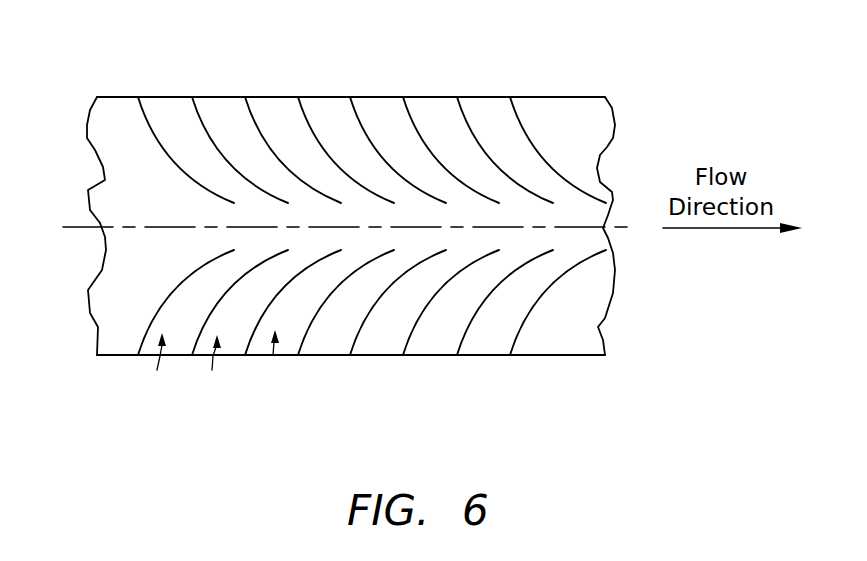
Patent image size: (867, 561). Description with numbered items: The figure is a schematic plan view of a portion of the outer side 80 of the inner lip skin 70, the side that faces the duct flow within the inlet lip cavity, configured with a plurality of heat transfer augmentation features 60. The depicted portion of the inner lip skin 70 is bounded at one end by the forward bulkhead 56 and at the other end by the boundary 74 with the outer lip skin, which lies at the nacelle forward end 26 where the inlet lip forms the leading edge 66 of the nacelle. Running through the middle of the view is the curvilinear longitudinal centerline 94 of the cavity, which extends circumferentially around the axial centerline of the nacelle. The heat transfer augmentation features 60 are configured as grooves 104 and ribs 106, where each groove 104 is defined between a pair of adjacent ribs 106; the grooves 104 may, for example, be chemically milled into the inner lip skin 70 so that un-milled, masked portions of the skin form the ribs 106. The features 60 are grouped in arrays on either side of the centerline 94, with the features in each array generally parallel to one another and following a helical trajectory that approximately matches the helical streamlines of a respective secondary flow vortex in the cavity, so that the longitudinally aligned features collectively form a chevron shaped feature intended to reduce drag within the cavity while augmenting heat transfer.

The nacelle forward end 26 is at (378, 395).
The forward bulkhead 56 is at (568, 97).
The heat transfer augmentation features 60 is at (157, 370).
The leading edge 66 is at (378, 395).
The inner lip skin 70 is at (80, 323).
The boundary 74 is at (575, 355).
The outer side 80 is at (127, 188).
The curvilinear longitudinal centerline 94 is at (80, 228).
The grooves 104 is at (306, 131).
The ribs 106 is at (273, 120).